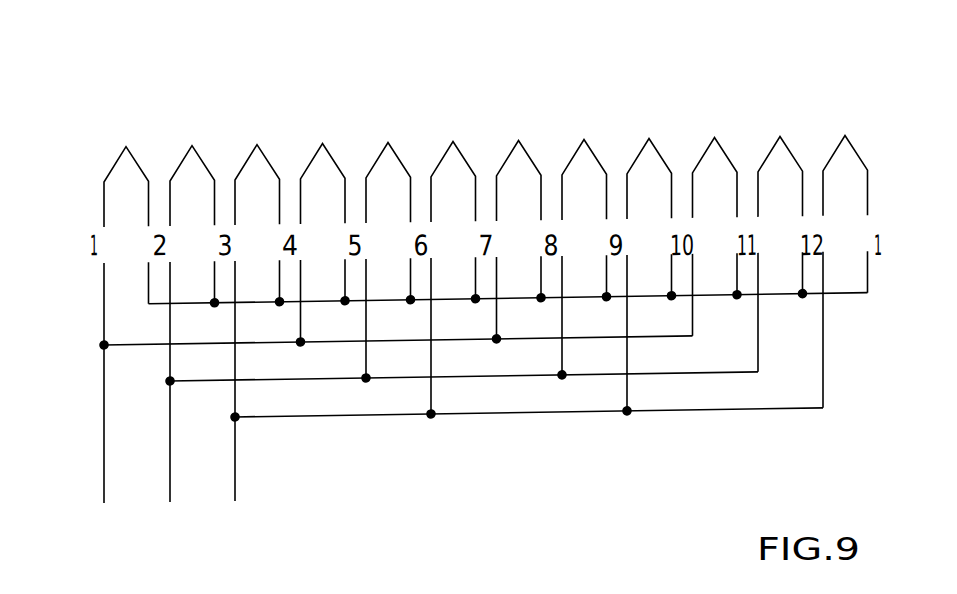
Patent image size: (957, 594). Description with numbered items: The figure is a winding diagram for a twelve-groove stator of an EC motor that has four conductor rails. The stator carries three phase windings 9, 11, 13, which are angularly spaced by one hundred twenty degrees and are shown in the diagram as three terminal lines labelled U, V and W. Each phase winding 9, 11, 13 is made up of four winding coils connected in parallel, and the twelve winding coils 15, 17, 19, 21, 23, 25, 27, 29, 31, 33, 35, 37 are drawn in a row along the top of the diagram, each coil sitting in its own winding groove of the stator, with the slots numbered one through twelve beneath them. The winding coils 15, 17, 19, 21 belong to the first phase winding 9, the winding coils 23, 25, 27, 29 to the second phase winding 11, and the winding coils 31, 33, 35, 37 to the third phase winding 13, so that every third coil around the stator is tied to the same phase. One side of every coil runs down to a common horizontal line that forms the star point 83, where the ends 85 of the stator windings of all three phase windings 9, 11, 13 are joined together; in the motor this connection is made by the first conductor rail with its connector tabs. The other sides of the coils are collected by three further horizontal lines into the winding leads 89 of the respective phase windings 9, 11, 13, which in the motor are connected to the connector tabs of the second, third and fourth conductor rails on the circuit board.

The phase winding 9 is at (103, 412).
The phase winding 11 is at (169, 468).
The phase winding 13 is at (236, 469).
The winding coil 15 is at (117, 161).
The winding coil 17 is at (313, 158).
The winding coil 19 is at (509, 158).
The winding coil 21 is at (705, 156).
The winding coil 23 is at (183, 161).
The winding coil 25 is at (379, 161).
The winding coil 27 is at (575, 161).
The winding coil 29 is at (771, 161).
The winding coil 31 is at (248, 161).
The winding coil 33 is at (444, 161).
The winding coil 35 is at (640, 161).
The winding coil 37 is at (836, 161).
The star point 83 is at (848, 309).
The ends of the stator windings 85 is at (664, 273).
The winding leads 89 is at (301, 325).